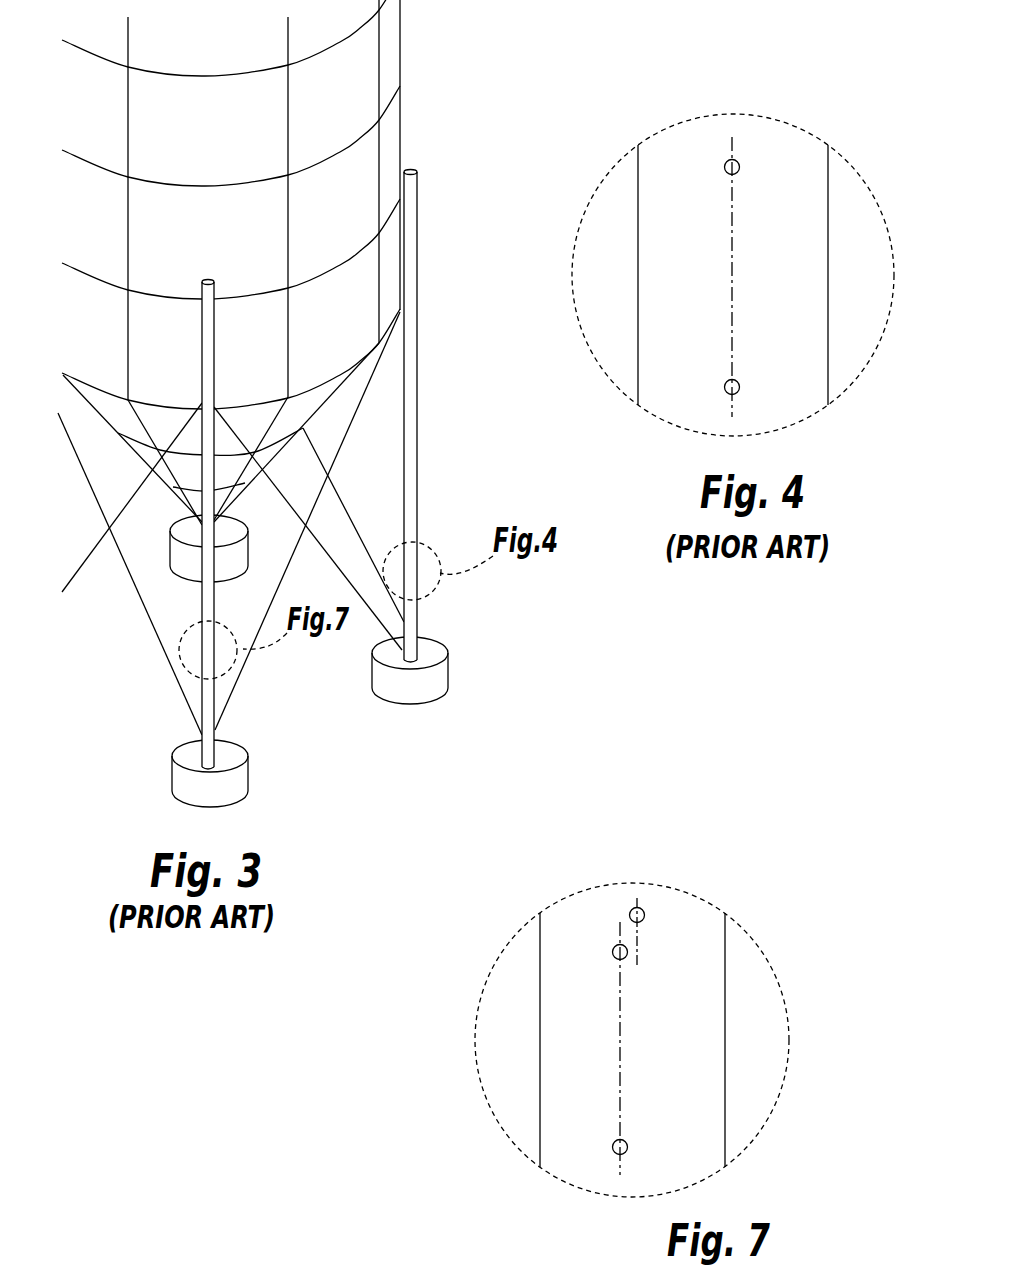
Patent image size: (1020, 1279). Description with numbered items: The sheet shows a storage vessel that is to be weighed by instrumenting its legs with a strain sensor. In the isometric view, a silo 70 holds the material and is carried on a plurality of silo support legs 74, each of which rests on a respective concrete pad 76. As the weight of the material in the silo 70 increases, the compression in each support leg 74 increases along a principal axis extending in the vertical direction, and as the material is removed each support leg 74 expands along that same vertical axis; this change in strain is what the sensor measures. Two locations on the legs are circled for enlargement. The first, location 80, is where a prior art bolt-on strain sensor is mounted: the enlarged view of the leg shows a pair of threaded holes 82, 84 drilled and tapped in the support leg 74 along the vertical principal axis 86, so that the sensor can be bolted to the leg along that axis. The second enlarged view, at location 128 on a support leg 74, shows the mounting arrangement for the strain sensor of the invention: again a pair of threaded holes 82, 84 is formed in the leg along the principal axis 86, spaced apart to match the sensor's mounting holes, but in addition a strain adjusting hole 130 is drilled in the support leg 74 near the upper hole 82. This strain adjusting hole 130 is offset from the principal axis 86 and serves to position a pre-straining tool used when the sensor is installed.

In FIG. 3, the silo 70 is at (403, 110).
In FIG. 3, the silo support leg 74 is at (203, 698).
In FIG. 4, the silo support leg 74 is at (828, 198).
In FIG. 7, the silo support leg 74 is at (728, 955).
In FIG. 3, the concrete pad 76 is at (226, 576).
In FIG. 3, the location 80 is at (437, 548).
In FIG. 4, the location 80 is at (884, 327).
In FIG. 4, the threaded hole 82 is at (724, 167).
In FIG. 7, the threaded hole 82 is at (613, 950).
In FIG. 4, the threaded hole 84 is at (740, 387).
In FIG. 7, the threaded hole 84 is at (612, 1147).
In FIG. 4, the vertical principal axis 86 is at (733, 348).
In FIG. 7, the vertical principal axis 86 is at (620, 1085).
In FIG. 3, the location 128 is at (242, 664).
In FIG. 7, the location 128 is at (788, 1083).
In FIG. 7, the strain adjusting hole 130 is at (645, 916).